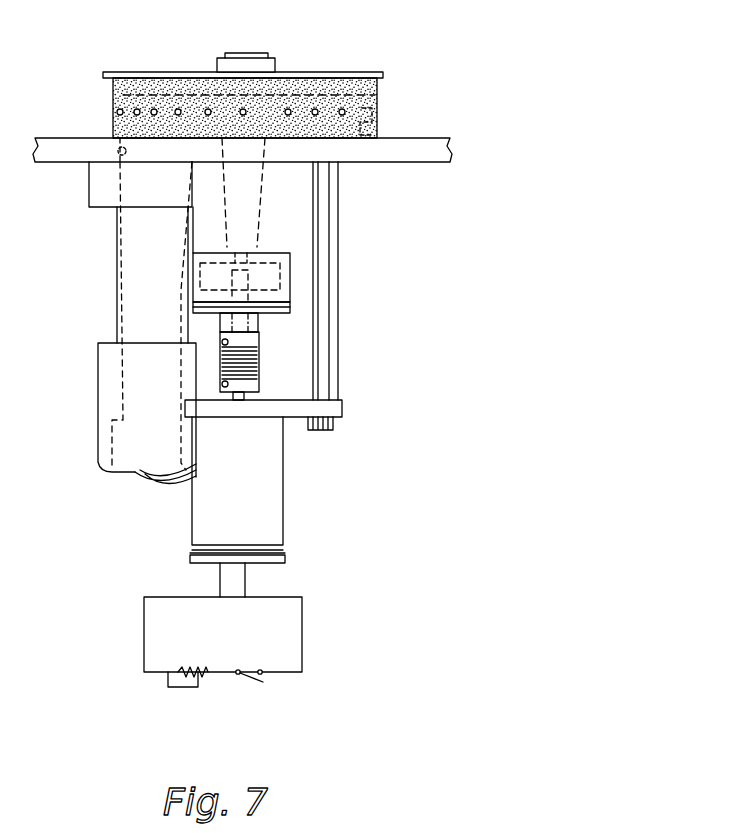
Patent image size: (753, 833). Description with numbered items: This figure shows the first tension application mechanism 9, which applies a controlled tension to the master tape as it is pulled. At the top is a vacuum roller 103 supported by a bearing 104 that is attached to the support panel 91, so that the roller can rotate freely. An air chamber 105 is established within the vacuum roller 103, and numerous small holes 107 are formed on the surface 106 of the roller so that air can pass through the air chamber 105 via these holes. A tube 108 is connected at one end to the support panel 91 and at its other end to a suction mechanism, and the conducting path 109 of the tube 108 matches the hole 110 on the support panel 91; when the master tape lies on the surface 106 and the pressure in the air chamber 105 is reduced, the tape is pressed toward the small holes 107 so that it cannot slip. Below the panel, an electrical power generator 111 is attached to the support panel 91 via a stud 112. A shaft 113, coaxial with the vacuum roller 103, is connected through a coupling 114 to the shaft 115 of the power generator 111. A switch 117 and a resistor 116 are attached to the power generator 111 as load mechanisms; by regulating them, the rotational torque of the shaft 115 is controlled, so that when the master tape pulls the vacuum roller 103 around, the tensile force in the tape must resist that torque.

The vacuum roller 103 is at (342, 72).
The surface 106 is at (113, 97).
The small holes 107 is at (155, 108).
The first tension application mechanism 9 is at (262, 68).
The air chamber 105 is at (366, 126).
The support panel 91 is at (392, 153).
The hole 110 is at (118, 153).
The tube 108 is at (113, 193).
The conducting path 109 is at (120, 288).
The shaft 113 is at (246, 199).
The bearing 104 is at (300, 237).
The spring coupling 114 is at (245, 345).
The shaft of the power generator 115 is at (240, 397).
The stud 112 is at (336, 355).
The electrical power generator 111 is at (270, 497).
The resistor 116 is at (203, 675).
The switch 117 is at (252, 680).